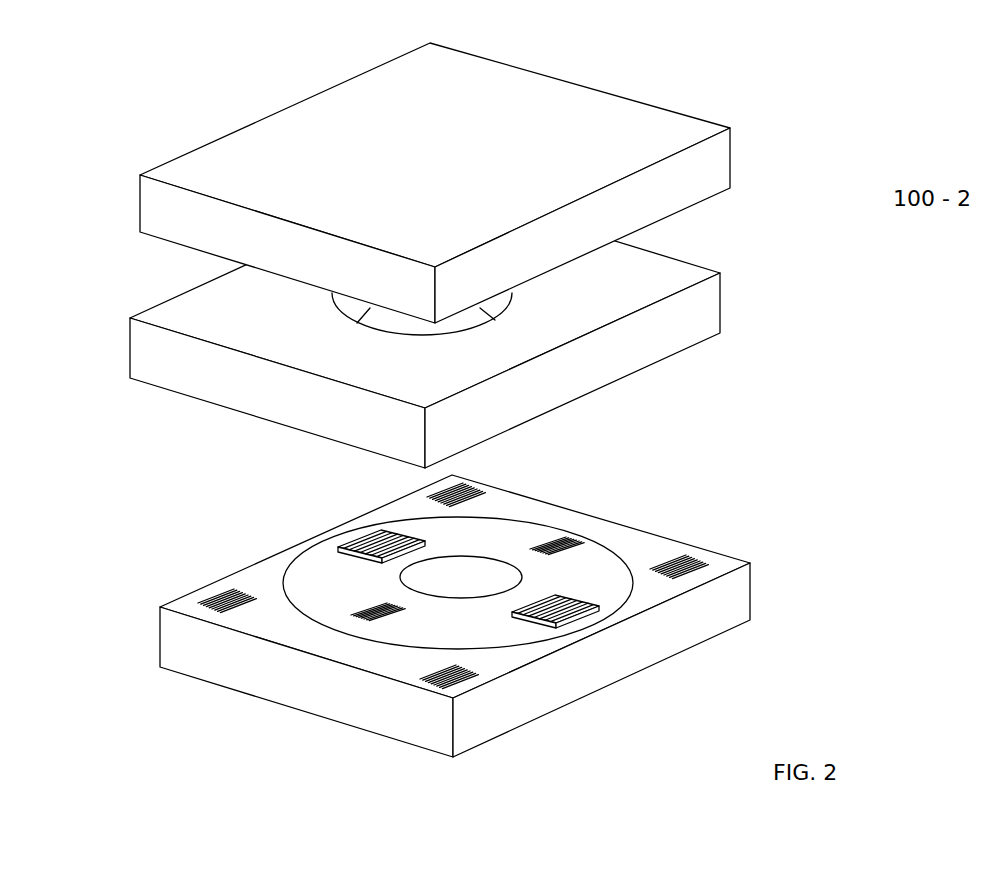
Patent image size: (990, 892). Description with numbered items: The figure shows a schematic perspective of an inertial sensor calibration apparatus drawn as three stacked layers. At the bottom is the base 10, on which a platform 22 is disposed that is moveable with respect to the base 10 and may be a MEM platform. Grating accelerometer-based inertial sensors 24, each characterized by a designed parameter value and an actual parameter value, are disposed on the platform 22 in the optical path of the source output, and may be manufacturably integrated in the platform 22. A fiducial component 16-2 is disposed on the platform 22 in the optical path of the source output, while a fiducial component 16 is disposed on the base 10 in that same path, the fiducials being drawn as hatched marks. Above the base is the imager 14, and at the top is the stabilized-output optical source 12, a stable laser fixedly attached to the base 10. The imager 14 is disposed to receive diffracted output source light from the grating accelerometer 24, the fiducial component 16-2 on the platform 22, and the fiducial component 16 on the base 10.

The base 10 is at (272, 680).
The stabilized-output optical source 12 is at (732, 155).
The imager 14 is at (727, 298).
The fiducial component 16 is at (213, 588).
The fiducial component 16-2 is at (370, 612).
The platform 22 is at (598, 555).
The grating accelerometer-based inertial sensor 24 is at (380, 546).